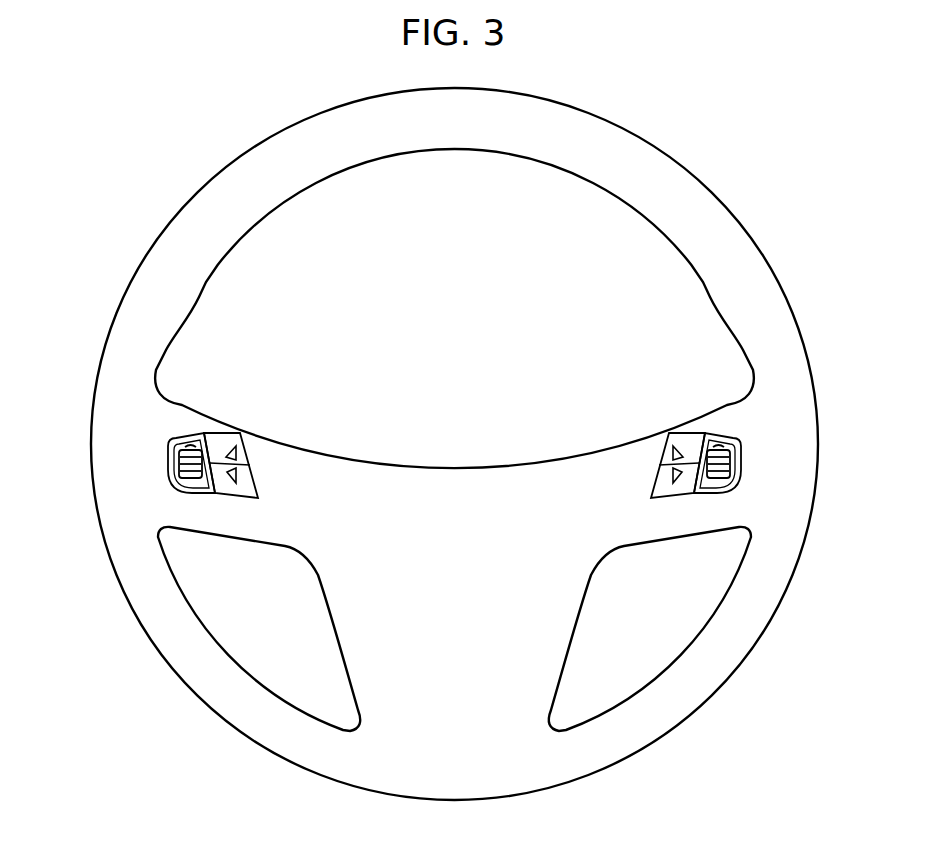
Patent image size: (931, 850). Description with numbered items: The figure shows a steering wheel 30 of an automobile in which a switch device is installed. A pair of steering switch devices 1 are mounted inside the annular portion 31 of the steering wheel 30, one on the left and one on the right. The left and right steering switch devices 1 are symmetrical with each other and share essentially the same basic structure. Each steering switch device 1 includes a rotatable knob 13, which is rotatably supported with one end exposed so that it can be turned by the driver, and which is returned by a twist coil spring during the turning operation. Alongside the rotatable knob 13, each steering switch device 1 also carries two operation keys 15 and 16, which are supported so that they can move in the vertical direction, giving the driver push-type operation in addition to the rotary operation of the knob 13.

The steering switch device 1 is at (196, 436).
The rotatable knob 13 is at (182, 460).
The operation key 15 is at (219, 437).
The operation key 16 is at (663, 490).
The steering wheel 30 is at (216, 176).
The annular portion 31 is at (693, 198).